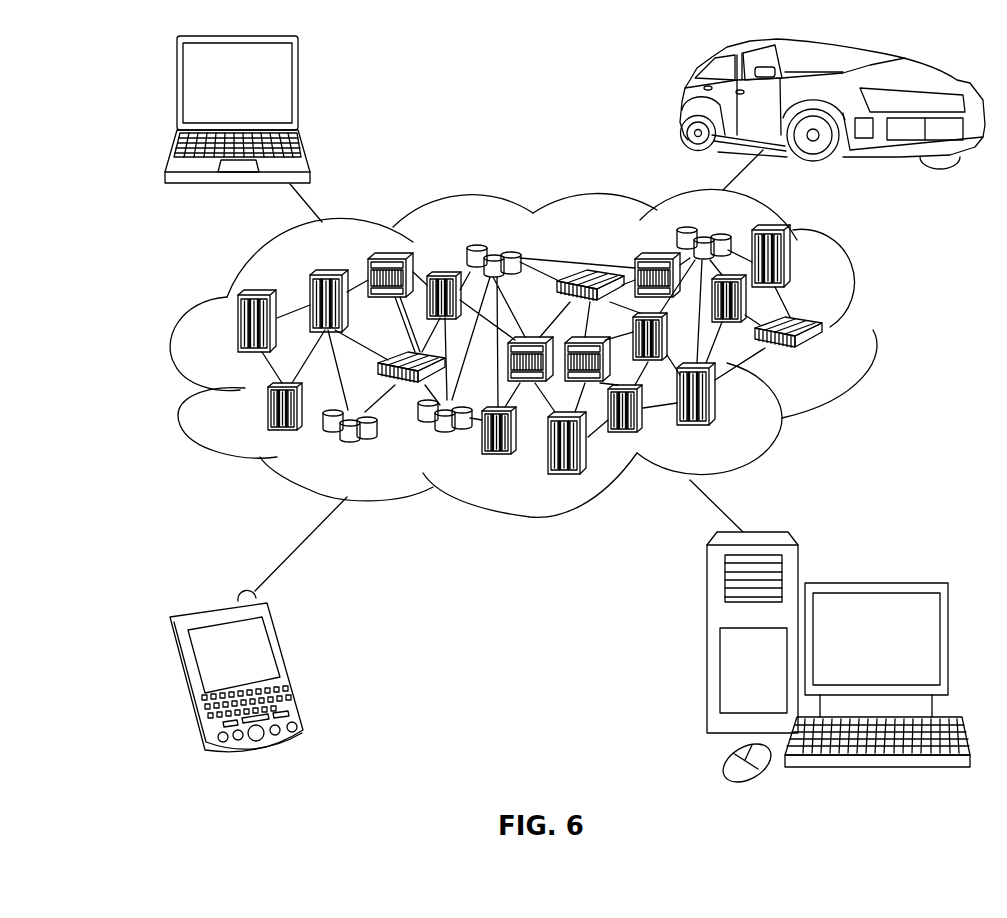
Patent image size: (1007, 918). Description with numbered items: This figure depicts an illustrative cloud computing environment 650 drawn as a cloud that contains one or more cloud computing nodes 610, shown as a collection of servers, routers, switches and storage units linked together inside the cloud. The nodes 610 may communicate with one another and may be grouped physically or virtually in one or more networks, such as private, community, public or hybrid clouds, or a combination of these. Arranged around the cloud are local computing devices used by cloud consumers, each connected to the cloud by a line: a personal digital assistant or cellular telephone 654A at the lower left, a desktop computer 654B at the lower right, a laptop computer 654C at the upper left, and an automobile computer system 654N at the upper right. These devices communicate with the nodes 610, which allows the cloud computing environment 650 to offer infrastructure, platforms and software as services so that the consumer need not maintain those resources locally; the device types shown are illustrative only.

The laptop computer 654C is at (299, 90).
The automobile computer system 654N is at (680, 102).
The cloud computing environment 650 is at (877, 333).
The cloud computing nodes 610 is at (822, 357).
The personal digital assistant or cellular telephone 654A is at (292, 662).
The desktop computer 654B is at (873, 583).